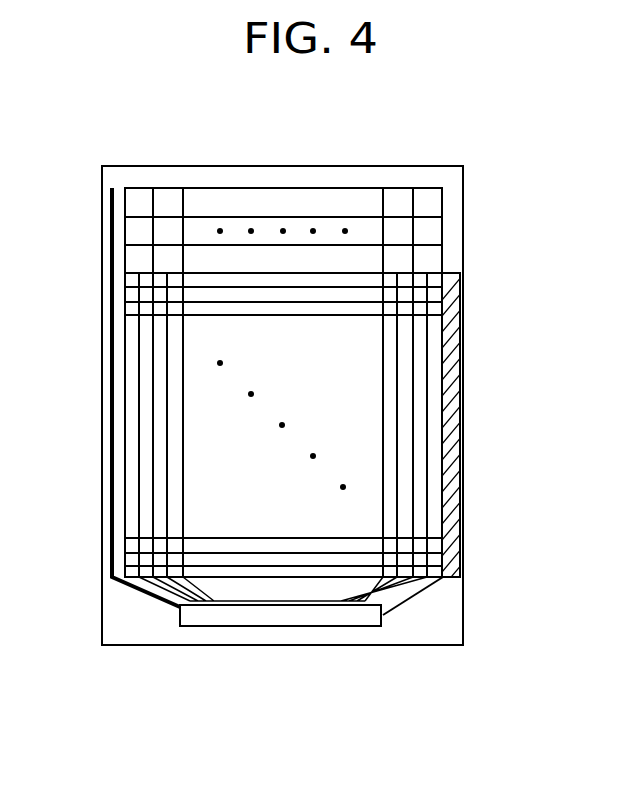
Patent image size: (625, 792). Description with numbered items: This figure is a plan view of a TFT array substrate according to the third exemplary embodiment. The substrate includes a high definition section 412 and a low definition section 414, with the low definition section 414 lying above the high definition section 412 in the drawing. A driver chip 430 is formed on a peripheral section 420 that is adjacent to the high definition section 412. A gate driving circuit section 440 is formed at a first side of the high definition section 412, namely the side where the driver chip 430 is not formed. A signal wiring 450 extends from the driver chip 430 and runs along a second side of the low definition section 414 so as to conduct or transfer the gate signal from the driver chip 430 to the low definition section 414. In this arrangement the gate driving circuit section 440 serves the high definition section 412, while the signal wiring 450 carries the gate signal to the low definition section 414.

The high definition section 412 is at (432, 418).
The low definition section 414 is at (428, 203).
The peripheral section 420 is at (117, 613).
The driver chip 430 is at (283, 614).
The gate driving circuit section 440 is at (450, 372).
The signal wiring 450 is at (113, 263).